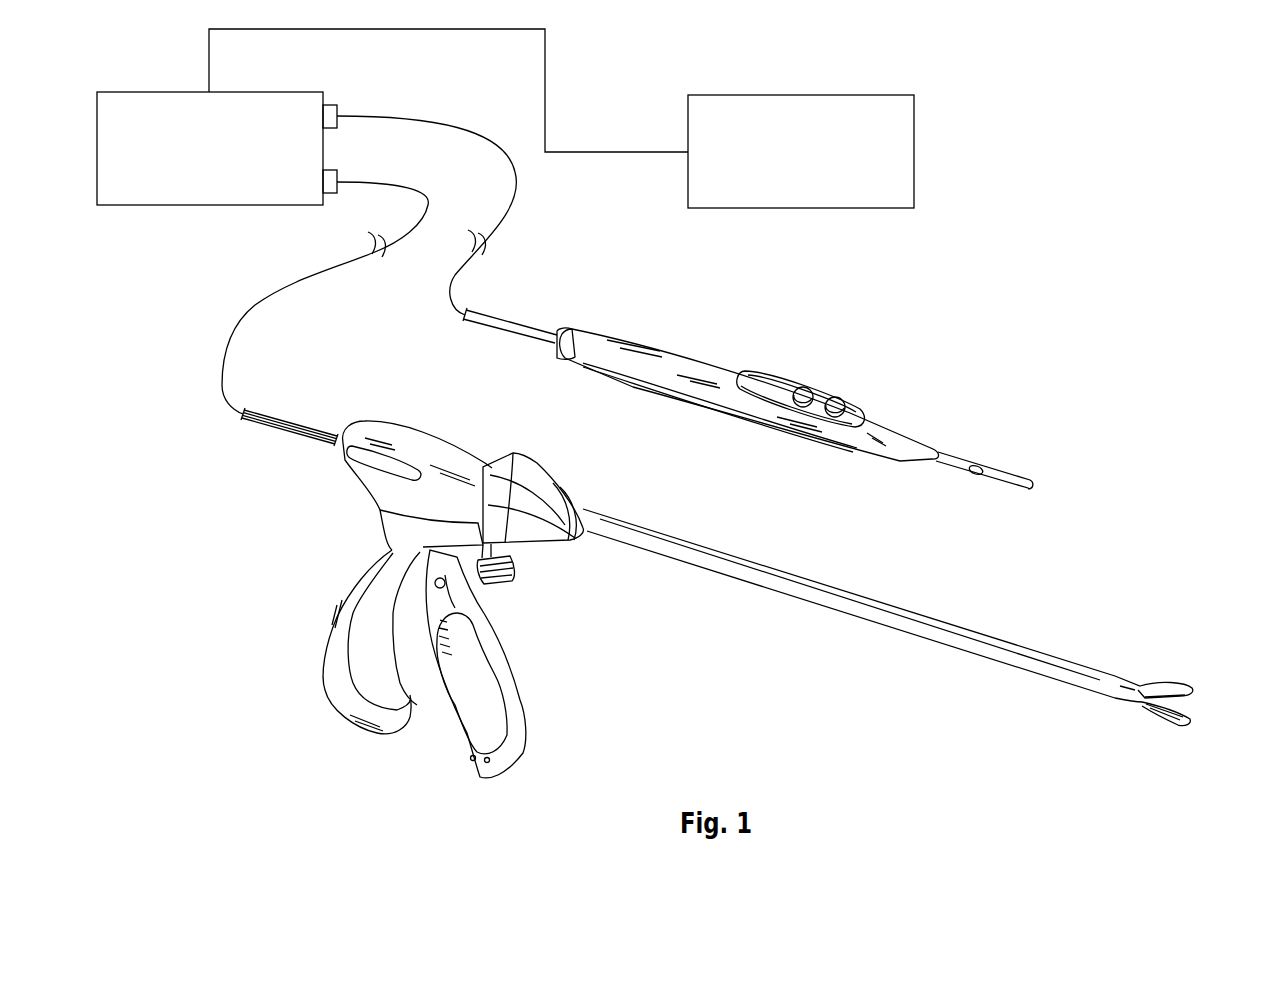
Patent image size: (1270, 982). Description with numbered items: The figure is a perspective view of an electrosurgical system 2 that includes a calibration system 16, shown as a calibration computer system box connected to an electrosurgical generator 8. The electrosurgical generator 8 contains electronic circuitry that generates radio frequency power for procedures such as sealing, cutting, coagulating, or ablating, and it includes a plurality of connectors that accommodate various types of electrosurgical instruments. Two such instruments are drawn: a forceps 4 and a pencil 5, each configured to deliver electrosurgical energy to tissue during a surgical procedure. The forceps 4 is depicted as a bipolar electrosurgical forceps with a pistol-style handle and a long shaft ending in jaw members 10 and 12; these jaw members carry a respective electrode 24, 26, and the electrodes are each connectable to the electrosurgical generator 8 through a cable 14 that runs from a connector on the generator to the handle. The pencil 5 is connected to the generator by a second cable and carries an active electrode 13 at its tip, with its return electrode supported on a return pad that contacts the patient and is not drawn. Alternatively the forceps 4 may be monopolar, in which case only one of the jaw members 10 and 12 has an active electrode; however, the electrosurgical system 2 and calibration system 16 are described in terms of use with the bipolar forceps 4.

The electrosurgical system 2 is at (1000, 92).
The forceps 4 is at (894, 570).
The pencil 5 is at (817, 355).
The electrosurgical generator 8 is at (250, 78).
The jaw member 10 is at (1160, 676).
The jaw member 12 is at (1160, 724).
The active electrode 13 is at (1005, 458).
The cable 14 is at (292, 388).
The calibration system 16 is at (816, 80).
The electrode 24 is at (1192, 697).
The electrode 26 is at (1188, 709).